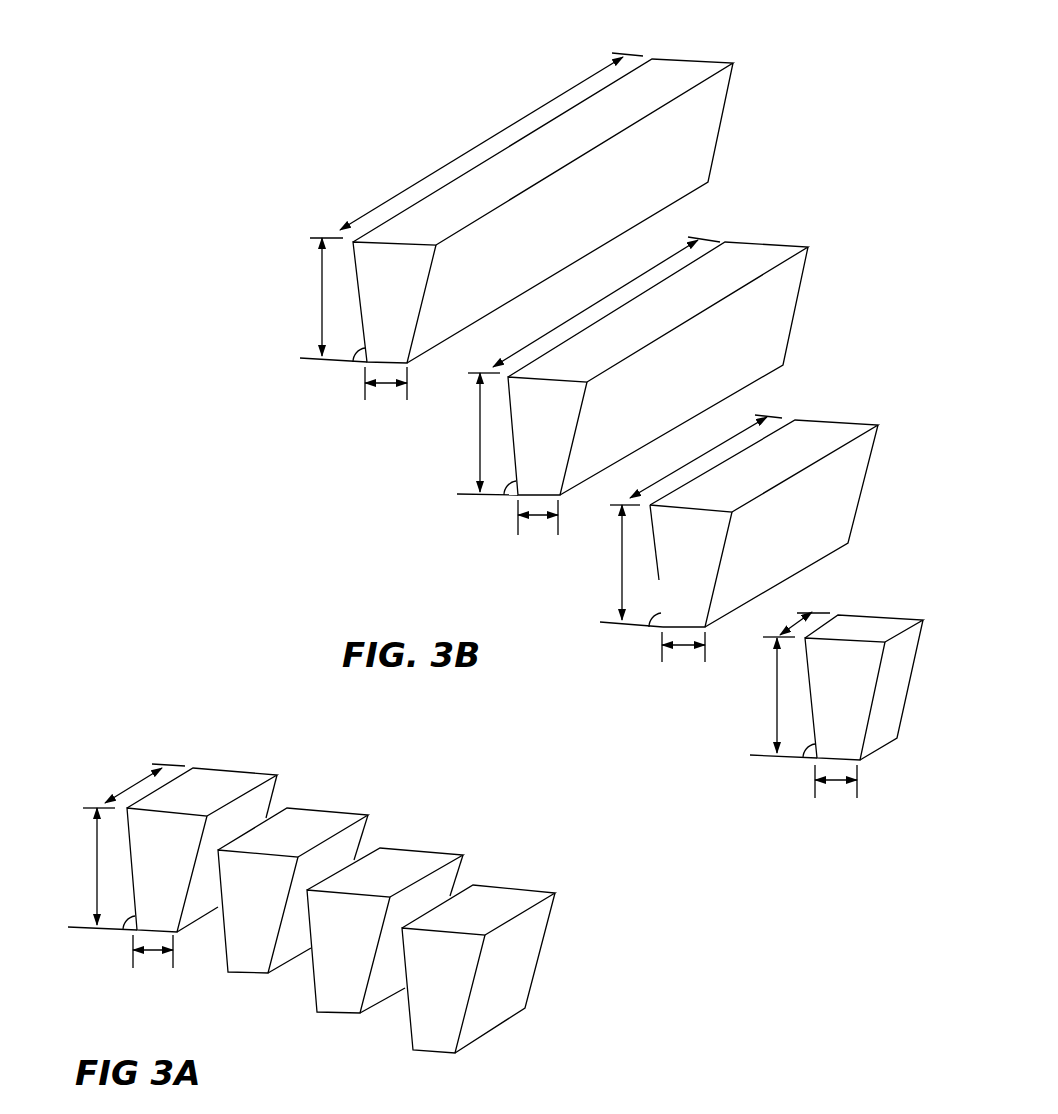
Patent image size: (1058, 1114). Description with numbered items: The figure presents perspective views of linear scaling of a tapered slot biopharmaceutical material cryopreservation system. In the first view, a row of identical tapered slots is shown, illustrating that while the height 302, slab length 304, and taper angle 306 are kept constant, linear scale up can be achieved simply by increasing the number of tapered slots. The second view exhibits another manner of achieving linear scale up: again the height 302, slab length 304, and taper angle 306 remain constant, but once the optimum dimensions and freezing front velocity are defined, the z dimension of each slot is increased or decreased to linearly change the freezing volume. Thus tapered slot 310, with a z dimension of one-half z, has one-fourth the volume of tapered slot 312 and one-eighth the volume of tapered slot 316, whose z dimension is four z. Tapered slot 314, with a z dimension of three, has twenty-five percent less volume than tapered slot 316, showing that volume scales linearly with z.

In FIG. 3B, the height 302 is at (544, 498).
In FIG. 3A, the height 302 is at (89, 869).
In FIG. 3B, the slab length 304 is at (611, 603).
In FIG. 3A, the slab length 304 is at (153, 970).
In FIG. 3B, the taper angle 306 is at (570, 539).
In FIG. 3A, the taper angle 306 is at (115, 906).
In FIG. 3B, the tapered slot 310 is at (852, 606).
In FIG. 3B, the tapered slot 312 is at (808, 410).
In FIG. 3B, the tapered slot 314 is at (768, 236).
In FIG. 3B, the tapered slot 316 is at (684, 48).